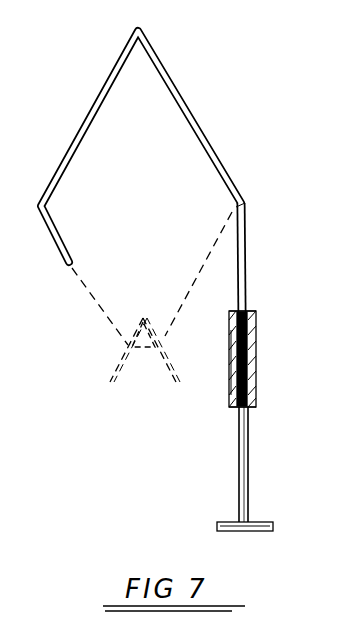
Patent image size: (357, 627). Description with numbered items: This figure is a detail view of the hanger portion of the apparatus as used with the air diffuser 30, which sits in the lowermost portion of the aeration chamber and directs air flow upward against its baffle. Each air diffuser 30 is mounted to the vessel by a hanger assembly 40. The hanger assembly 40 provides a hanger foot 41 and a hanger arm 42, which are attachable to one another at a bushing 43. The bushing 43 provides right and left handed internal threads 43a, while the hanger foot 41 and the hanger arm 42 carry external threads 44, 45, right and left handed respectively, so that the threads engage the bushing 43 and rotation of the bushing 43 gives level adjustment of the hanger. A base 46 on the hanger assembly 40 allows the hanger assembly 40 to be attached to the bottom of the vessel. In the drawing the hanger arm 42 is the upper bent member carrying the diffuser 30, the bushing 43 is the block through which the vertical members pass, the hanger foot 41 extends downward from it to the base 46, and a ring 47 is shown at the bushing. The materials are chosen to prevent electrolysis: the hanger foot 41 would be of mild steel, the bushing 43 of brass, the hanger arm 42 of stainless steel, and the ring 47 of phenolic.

The air diffuser 30 is at (97, 297).
The hanger assembly 40 is at (247, 208).
The hanger foot 41 is at (250, 470).
The hanger arm 42 is at (196, 119).
The bushing 43 is at (257, 355).
The internal threads 43a is at (231, 346).
The external threads 44 is at (255, 398).
The external threads 45 is at (257, 320).
The base 46 is at (243, 532).
The ring 47 is at (253, 372).